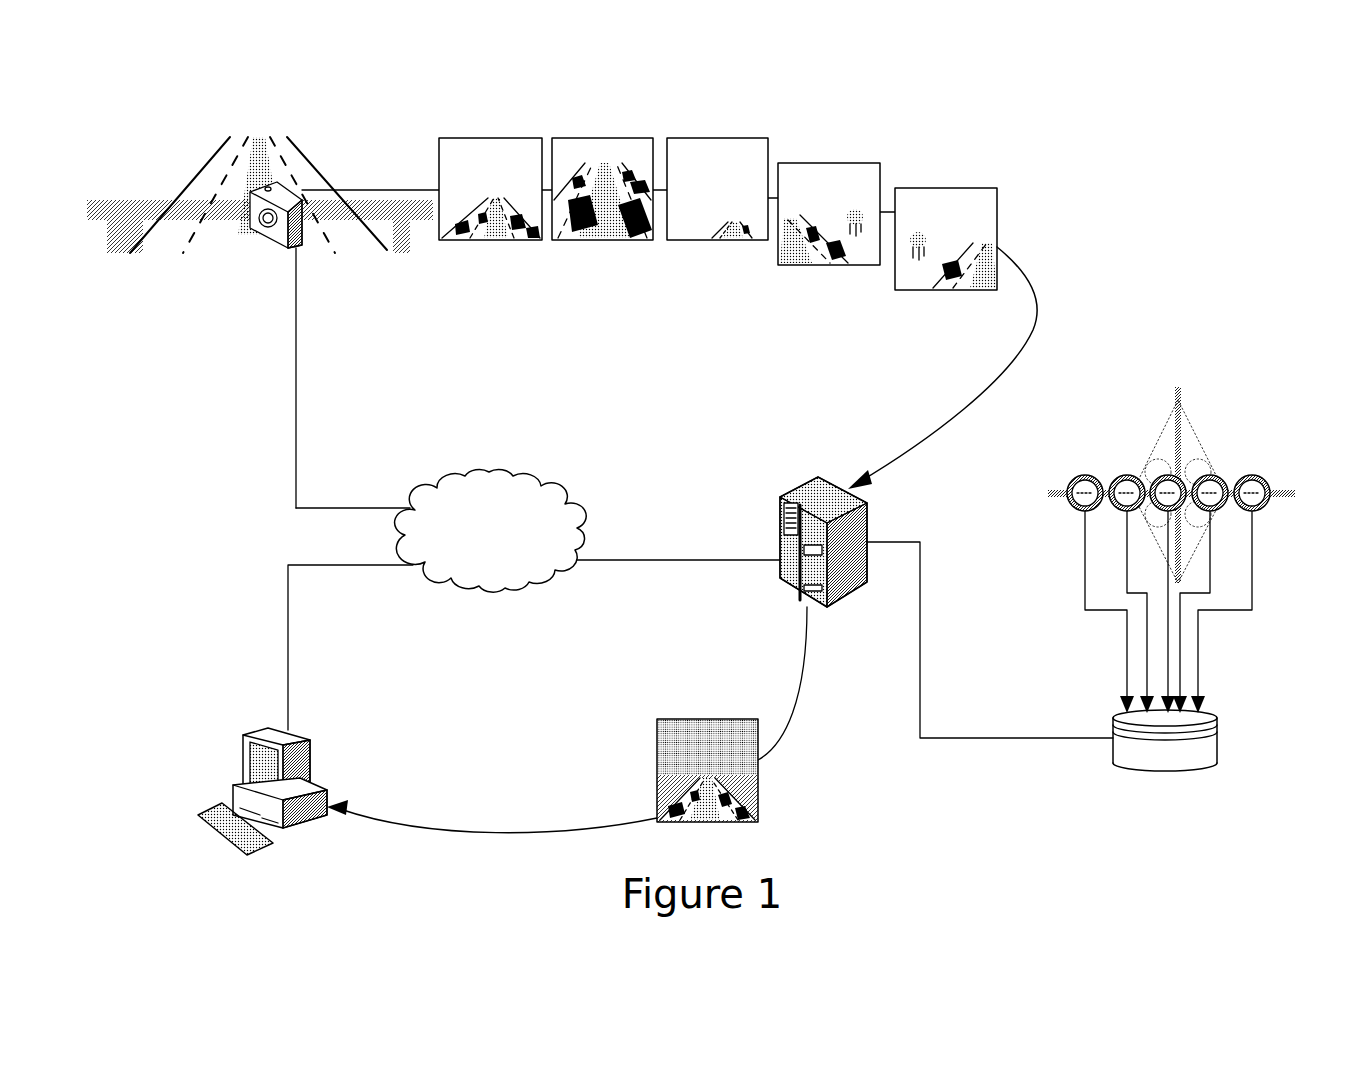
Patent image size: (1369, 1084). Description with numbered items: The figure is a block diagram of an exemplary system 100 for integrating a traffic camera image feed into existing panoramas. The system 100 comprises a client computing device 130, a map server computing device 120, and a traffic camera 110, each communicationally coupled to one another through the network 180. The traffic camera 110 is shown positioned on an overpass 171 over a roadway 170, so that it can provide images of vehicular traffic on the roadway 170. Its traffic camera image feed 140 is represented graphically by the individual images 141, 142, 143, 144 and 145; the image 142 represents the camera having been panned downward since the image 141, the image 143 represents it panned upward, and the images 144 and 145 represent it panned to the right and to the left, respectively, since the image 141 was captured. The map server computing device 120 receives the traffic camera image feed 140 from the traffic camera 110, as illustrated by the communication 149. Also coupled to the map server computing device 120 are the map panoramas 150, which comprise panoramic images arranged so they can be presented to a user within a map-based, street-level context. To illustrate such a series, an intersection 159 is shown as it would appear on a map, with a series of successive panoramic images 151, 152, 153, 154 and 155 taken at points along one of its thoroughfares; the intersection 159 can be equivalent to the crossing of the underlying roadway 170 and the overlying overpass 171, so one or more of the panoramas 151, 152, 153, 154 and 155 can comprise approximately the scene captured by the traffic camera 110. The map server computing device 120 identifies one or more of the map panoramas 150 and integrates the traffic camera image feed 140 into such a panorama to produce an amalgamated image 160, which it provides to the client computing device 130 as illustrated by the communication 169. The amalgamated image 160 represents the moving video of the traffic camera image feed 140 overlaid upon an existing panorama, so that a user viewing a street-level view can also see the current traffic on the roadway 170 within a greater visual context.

The system 100 is at (1195, 168).
The traffic camera 110 is at (305, 233).
The map server computing device 120 is at (867, 563).
The client computing device 130 is at (322, 777).
The traffic camera image feed 140 is at (1006, 122).
The image 141 is at (463, 138).
The image 142 is at (576, 138).
The image 143 is at (690, 138).
The image 144 is at (800, 163).
The image 145 is at (927, 188).
The communication 149 is at (963, 408).
The map panoramas 150 is at (1217, 737).
The panoramic image 151 is at (1086, 475).
The panoramic image 152 is at (1127, 475).
The panoramic image 153 is at (1168, 475).
The panoramic image 154 is at (1211, 475).
The panoramic image 155 is at (1252, 475).
The intersection 159 is at (1180, 403).
The amalgamated image 160 is at (683, 719).
The communication 169 is at (443, 827).
The roadway 170 is at (300, 170).
The overpass 171 is at (171, 202).
The network 180 is at (577, 512).